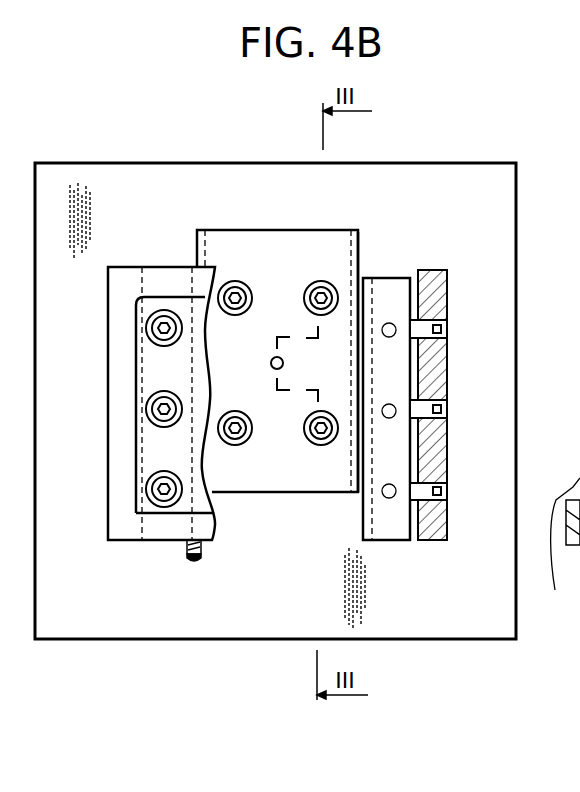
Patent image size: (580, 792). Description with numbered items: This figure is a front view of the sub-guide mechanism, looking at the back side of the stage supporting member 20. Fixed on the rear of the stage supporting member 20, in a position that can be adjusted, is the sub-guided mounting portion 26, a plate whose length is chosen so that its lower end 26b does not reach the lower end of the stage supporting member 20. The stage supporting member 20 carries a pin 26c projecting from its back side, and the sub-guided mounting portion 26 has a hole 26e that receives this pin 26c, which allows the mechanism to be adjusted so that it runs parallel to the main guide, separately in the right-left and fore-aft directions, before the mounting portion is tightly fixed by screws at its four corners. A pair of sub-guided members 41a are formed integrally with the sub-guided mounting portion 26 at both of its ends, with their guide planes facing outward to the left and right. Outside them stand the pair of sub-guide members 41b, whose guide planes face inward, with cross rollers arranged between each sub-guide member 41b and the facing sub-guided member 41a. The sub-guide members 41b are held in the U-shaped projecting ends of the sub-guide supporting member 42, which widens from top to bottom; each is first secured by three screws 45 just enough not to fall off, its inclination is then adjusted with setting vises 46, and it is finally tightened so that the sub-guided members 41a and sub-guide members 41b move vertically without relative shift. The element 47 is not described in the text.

The stage supporting member 20 is at (495, 178).
The sub-guided mounting portion 26 is at (232, 237).
The sub-guided members 41a is at (352, 232).
The sub-guide members 41b is at (378, 278).
The sub-guide supporting member 42 is at (147, 543).
The screws 45 is at (146, 490).
The setting vises 46 is at (447, 493).
The lower end 26b is at (315, 445).
The pin 26c is at (281, 371).
The hole 26e is at (271, 366).
The adjacent element 47 is at (560, 552).